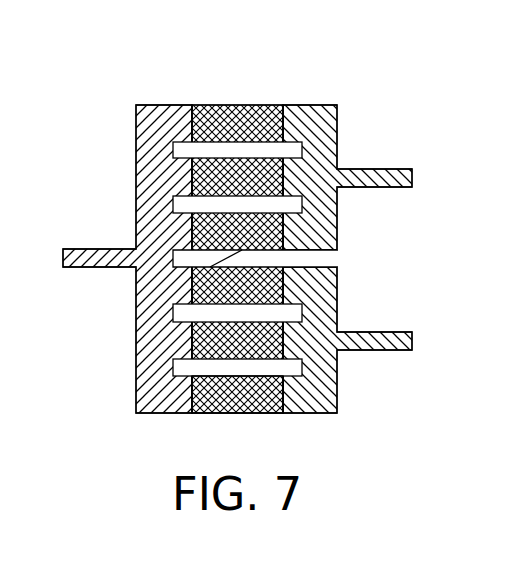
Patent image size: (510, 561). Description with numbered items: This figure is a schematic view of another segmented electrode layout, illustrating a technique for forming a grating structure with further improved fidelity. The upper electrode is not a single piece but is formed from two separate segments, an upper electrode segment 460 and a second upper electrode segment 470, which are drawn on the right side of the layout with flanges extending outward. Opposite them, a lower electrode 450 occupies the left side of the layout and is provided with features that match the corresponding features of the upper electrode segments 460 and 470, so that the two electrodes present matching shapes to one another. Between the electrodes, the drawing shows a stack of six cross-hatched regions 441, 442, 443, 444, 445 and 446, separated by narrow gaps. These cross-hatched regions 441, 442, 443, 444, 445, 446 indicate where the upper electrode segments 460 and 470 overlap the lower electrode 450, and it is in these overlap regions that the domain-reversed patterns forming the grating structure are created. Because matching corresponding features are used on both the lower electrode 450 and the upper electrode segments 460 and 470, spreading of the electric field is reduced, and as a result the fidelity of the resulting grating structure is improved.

The lower electrode 450 is at (125, 118).
The upper electrode segment 460 is at (348, 147).
The upper electrode segment 470 is at (348, 308).
The cross-hatched region 441 is at (237, 142).
The cross-hatched region 442 is at (237, 196).
The cross-hatched region 443 is at (192, 268).
The cross-hatched region 444 is at (237, 304).
The cross-hatched region 445 is at (237, 359).
The cross-hatched region 446 is at (237, 413).